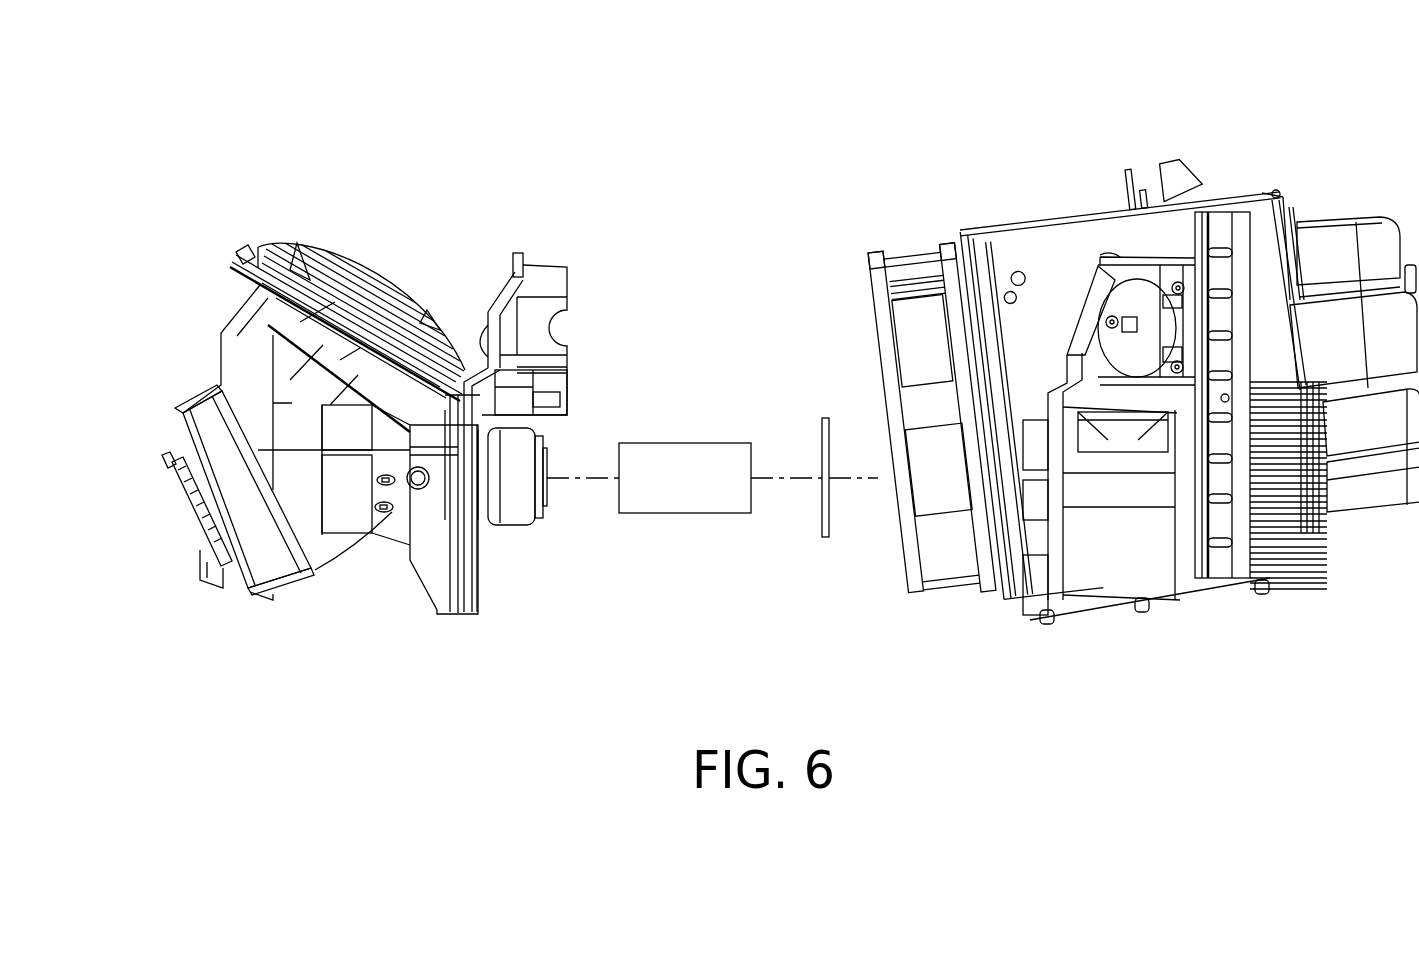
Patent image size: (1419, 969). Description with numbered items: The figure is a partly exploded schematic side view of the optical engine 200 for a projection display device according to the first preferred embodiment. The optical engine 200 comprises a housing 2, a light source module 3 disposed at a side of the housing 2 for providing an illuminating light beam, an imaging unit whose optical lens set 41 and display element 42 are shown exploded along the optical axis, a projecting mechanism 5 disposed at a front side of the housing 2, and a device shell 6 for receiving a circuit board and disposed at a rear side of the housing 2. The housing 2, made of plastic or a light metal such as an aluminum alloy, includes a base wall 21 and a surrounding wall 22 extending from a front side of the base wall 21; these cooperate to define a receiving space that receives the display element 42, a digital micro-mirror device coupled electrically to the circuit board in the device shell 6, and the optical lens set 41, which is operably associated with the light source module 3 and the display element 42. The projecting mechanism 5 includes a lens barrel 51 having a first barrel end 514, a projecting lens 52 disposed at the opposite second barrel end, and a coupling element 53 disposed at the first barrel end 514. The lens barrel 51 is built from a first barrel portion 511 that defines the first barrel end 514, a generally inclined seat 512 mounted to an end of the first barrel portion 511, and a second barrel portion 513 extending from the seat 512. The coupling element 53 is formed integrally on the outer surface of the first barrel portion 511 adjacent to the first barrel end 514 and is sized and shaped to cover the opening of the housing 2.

The projecting mechanism 5 is at (236, 213).
The lens barrel 51 is at (258, 627).
The first barrel portion 511 is at (513, 512).
The seat 512 is at (198, 455).
The second barrel portion 513 is at (250, 373).
The first barrel end 514 is at (540, 492).
The projecting lens 52 is at (333, 268).
The coupling element 53 is at (498, 297).
The optical lens set 41 is at (667, 492).
The display element 42 is at (828, 527).
The optical engine 200 is at (892, 138).
The housing 2 is at (1155, 243).
The base wall 21 is at (1180, 560).
The surrounding wall 22 is at (1107, 575).
The light source module 3 is at (1050, 258).
The device shell 6 is at (1228, 232).